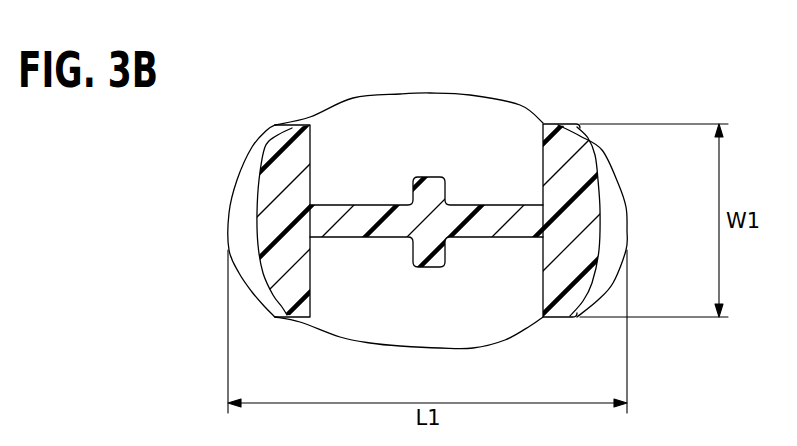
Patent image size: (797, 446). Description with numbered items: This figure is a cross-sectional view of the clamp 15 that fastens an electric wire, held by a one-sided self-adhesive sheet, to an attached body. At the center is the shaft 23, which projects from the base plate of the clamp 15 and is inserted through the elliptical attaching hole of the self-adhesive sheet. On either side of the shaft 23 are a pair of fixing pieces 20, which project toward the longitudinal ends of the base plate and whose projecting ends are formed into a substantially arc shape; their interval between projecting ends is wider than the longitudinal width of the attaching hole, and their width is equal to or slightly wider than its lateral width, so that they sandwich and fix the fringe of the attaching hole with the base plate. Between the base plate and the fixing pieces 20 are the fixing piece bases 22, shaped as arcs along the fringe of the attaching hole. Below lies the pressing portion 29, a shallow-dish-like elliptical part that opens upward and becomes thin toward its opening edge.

The clamp 15 is at (385, 94).
The fixing pieces 20 is at (237, 199).
The fixing piece bases 22 is at (275, 151).
The shaft 23 is at (492, 203).
The pressing portion 29 is at (465, 312).